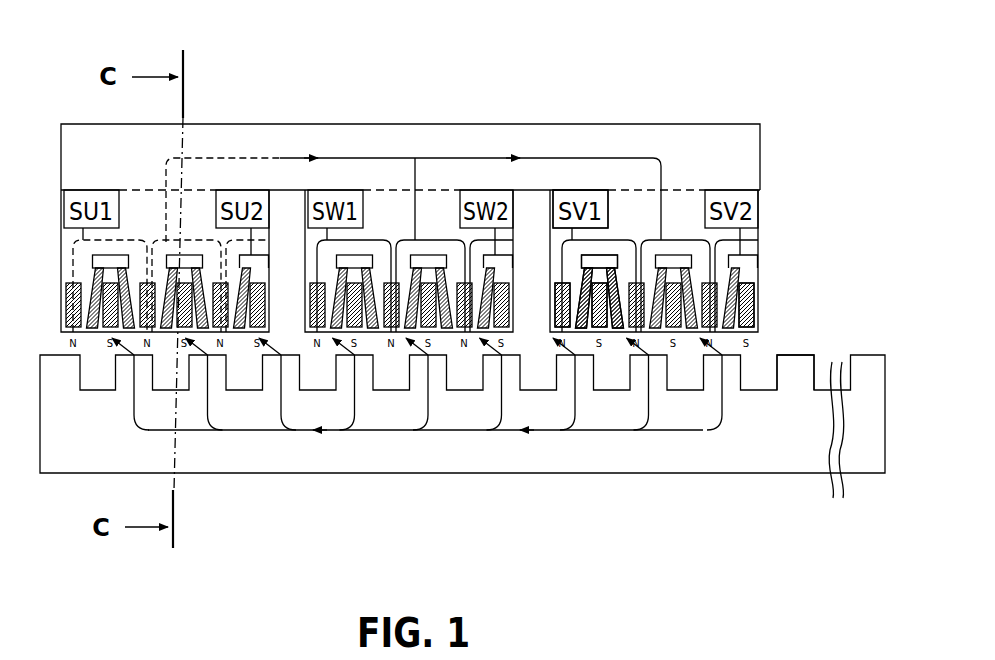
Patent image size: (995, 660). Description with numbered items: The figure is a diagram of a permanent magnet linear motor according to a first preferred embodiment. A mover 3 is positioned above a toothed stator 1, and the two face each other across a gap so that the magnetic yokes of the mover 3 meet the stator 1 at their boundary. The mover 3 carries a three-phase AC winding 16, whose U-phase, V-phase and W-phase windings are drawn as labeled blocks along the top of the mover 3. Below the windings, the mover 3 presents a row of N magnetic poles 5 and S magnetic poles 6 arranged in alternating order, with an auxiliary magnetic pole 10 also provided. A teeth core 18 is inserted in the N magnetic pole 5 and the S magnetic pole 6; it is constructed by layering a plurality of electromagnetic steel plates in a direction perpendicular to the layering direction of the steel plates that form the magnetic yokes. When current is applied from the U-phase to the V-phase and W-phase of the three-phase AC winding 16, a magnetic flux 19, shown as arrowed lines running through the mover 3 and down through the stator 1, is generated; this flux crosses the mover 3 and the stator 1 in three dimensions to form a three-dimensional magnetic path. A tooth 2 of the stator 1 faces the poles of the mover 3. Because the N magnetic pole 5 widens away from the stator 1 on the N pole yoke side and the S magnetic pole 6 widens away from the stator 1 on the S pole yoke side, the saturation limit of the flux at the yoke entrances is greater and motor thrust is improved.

The stator 1 is at (265, 447).
The stator tooth 2 is at (788, 363).
The mover 3 is at (527, 122).
The N magnetic pole 5 is at (547, 333).
The S magnetic pole 6 is at (597, 330).
The auxiliary magnetic pole 10 is at (623, 328).
The three-phase AC winding 16 is at (580, 190).
The teeth core 18 is at (753, 282).
The magnetic flux 19 is at (453, 156).